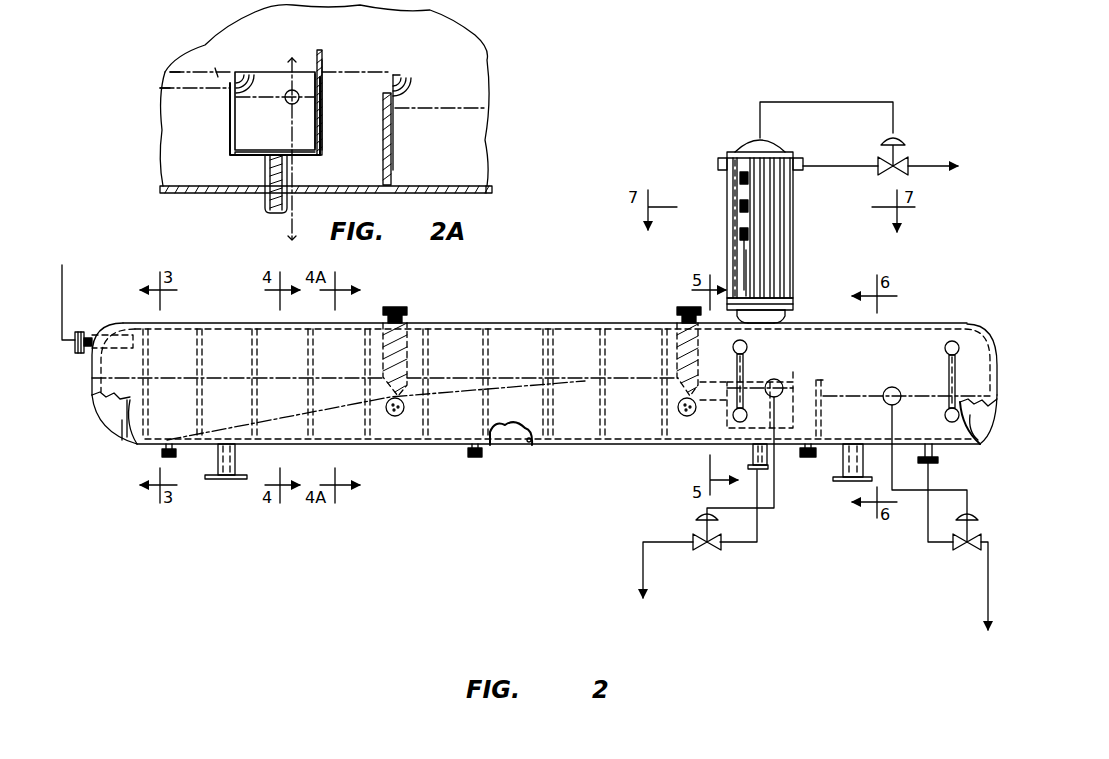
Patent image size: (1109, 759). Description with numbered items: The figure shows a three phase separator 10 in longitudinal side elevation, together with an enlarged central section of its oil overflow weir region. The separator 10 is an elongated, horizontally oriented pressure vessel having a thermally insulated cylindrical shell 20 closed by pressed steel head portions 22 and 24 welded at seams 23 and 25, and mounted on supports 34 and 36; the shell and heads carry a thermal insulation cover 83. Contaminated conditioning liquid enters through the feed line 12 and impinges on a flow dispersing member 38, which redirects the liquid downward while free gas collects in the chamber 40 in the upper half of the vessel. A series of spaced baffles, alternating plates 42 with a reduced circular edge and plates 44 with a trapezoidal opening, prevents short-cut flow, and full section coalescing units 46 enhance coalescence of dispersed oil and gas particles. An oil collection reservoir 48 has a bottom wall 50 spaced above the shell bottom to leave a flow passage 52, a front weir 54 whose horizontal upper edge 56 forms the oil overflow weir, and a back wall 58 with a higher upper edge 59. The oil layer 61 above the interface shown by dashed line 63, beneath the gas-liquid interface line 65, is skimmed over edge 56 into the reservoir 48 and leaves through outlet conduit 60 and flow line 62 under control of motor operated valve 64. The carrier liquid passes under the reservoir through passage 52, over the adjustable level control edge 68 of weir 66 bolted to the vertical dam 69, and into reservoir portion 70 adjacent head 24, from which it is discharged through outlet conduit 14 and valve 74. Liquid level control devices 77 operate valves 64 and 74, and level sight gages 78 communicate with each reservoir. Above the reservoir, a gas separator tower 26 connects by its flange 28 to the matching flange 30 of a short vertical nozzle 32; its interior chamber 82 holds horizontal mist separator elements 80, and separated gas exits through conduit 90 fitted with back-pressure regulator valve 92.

In FIG. 2, the three phase separator 10 is at (548, 318).
In FIG. 2, the feed line 12 is at (100, 322).
In FIG. 2, the outlet conduit 14 is at (924, 528).
In FIG. 2A, the shell 20 is at (198, 192).
In FIG. 2, the shell 20 is at (516, 446).
In FIG. 2, the head portion 22 is at (108, 426).
In FIG. 2, the seam 23 is at (122, 440).
In FIG. 2, the head portion 24 is at (978, 384).
In FIG. 2, the seam 25 is at (970, 442).
In FIG. 2, the gas separator tower 26 is at (745, 155).
In FIG. 2, the flange 28 is at (798, 295).
In FIG. 2, the matching flange 30 is at (798, 309).
In FIG. 2, the vertical nozzle 32 is at (778, 338).
In FIG. 2, the support 34 is at (226, 477).
In FIG. 2, the support 36 is at (832, 480).
In FIG. 2, the flow dispersing member 38 is at (170, 323).
In FIG. 2, the chamber 40 is at (584, 355).
In FIG. 2, the baffle plate 42 is at (205, 365).
In FIG. 2, the baffle 44 is at (259, 365).
In FIG. 2, the coalescing unit 46 is at (418, 322).
In FIG. 2A, the reservoir 48 is at (333, 68).
In FIG. 2, the reservoir 48 is at (800, 368).
In FIG. 2A, the bottom wall 50 is at (302, 162).
In FIG. 2A, the flow passage 52 is at (252, 166).
In FIG. 2, the flow passage 52 is at (785, 450).
In FIG. 2A, the weir 54 is at (229, 126).
In FIG. 2A, the upper edge 56 is at (237, 72).
In FIG. 2A, the back wall 58 is at (322, 100).
In FIG. 2A, the upper edge 59 is at (320, 50).
In FIG. 2A, the outlet conduit 60 is at (268, 210).
In FIG. 2A, the oil layer 61 is at (210, 72).
In FIG. 2, the oil layer 61 is at (726, 368).
In FIG. 2, the flow line 62 is at (740, 544).
In FIG. 2A, the dashed line 63 is at (165, 78).
In FIG. 2, the motor operated valve 64 is at (698, 552).
In FIG. 2A, the line 65 is at (182, 42).
In FIG. 2, the line 65 is at (238, 380).
In FIG. 2A, the adjustable level control weir 66 is at (420, 85).
In FIG. 2, the adjustable level control weir 66 is at (826, 384).
In FIG. 2A, the upper level control edge 68 is at (398, 60).
In FIG. 2A, the dam 69 is at (383, 140).
In FIG. 2, the dam 69 is at (822, 414).
In FIG. 2A, the reservoir portion 70 is at (421, 122).
In FIG. 2, the reservoir portion 70 is at (918, 418).
In FIG. 2, the motor operated valve 74 is at (958, 552).
In FIG. 2A, the liquid level control device 77 is at (286, 103).
In FIG. 2, the liquid level control device 77 is at (760, 382).
In FIG. 2, the level sight gage 78 is at (782, 328).
In FIG. 2, the mist separator element 80 is at (740, 208).
In FIG. 2, the interior chamber 82 is at (740, 235).
In FIG. 2A, the thermal insulation cover 83 is at (486, 196).
In FIG. 2, the thermal insulation cover 83 is at (530, 444).
In FIG. 2, the conduit 90 is at (938, 162).
In FIG. 2, the back-pressure regulator valve 92 is at (878, 172).